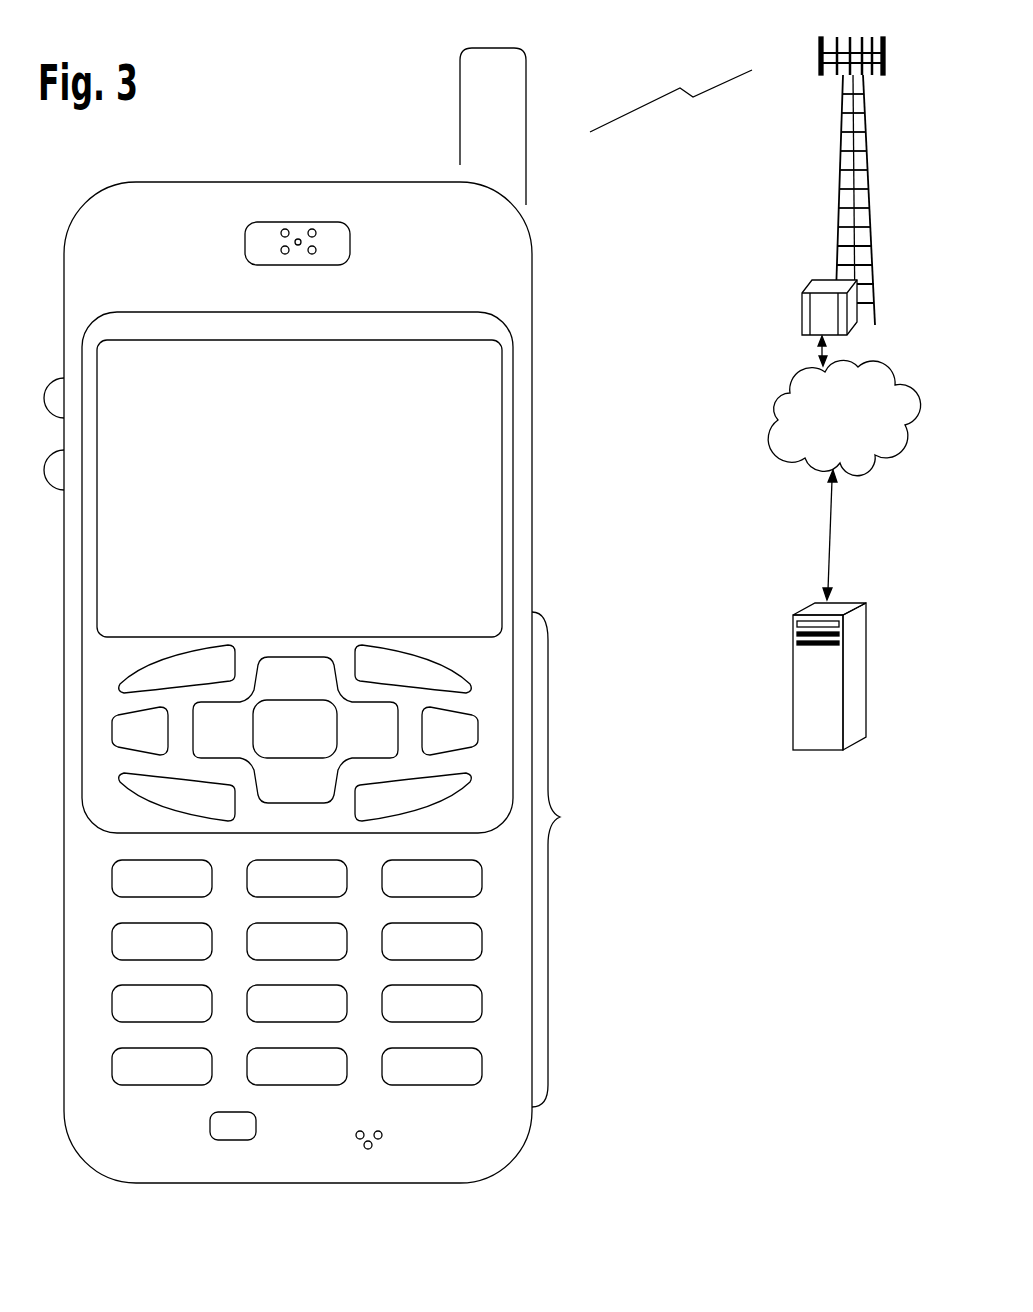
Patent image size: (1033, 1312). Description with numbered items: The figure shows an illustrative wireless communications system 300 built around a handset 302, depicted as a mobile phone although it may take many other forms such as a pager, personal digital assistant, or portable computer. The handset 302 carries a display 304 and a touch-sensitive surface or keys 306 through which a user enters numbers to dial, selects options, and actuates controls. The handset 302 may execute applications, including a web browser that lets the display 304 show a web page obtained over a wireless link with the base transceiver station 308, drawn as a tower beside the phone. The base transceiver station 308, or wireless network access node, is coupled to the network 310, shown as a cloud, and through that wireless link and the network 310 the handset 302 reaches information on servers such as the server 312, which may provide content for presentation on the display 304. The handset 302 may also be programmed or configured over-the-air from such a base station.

The wireless communications system 300 is at (248, 64).
The handset 302 is at (134, 1183).
The display 304 is at (502, 395).
The keys 306 is at (566, 859).
The base transceiver station 308 is at (837, 200).
The network 310 is at (779, 430).
The server 312 is at (818, 750).